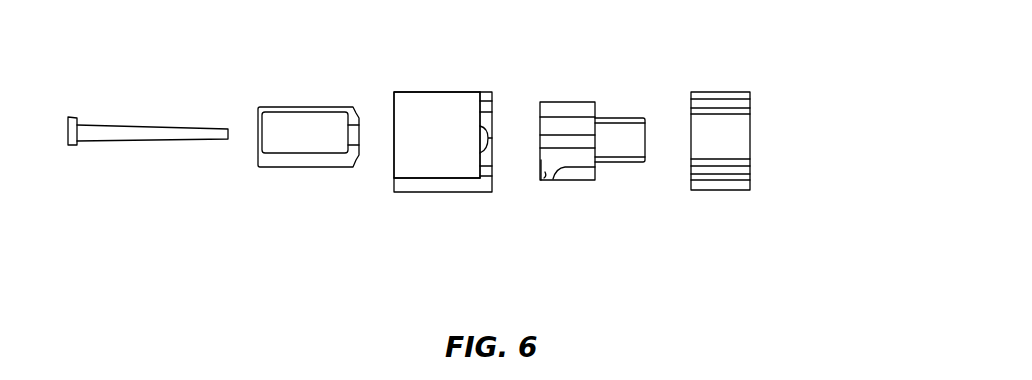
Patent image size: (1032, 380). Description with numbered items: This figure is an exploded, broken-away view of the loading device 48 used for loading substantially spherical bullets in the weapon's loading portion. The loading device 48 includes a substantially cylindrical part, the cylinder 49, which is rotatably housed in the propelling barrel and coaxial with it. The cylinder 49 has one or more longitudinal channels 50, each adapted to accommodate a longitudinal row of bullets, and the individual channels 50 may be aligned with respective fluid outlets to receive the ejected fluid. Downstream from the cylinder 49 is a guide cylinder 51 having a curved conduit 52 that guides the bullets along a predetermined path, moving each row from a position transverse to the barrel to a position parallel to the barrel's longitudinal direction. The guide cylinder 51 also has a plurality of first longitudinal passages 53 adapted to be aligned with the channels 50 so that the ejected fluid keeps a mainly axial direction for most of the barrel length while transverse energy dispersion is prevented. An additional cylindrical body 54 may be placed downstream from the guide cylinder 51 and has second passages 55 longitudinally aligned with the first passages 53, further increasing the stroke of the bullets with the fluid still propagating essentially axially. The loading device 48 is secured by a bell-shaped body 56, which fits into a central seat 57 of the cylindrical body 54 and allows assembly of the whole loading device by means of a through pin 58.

The loading device 48 is at (112, 78).
The cylinder 49 is at (717, 192).
The longitudinal channels 50 is at (750, 103).
The guide cylinder 51 is at (544, 176).
The curved conduit 52 is at (579, 170).
The first longitudinal passages 53 is at (570, 115).
The additional cylindrical body 54 is at (440, 182).
The second passages 55 is at (487, 97).
The bell-shaped body 56 is at (307, 158).
The central seat 57 is at (427, 108).
The through pin 58 is at (140, 133).